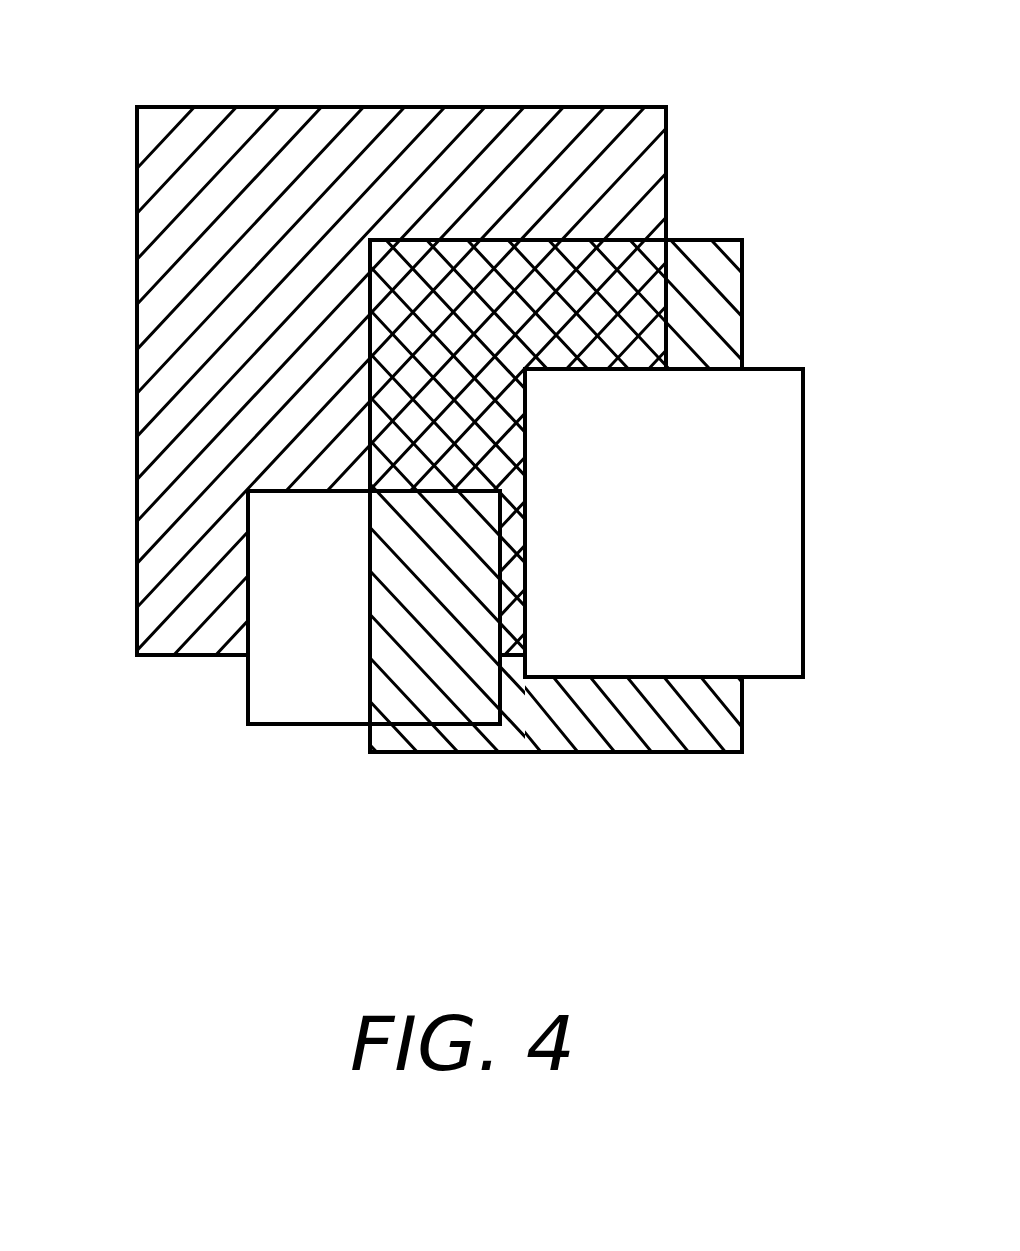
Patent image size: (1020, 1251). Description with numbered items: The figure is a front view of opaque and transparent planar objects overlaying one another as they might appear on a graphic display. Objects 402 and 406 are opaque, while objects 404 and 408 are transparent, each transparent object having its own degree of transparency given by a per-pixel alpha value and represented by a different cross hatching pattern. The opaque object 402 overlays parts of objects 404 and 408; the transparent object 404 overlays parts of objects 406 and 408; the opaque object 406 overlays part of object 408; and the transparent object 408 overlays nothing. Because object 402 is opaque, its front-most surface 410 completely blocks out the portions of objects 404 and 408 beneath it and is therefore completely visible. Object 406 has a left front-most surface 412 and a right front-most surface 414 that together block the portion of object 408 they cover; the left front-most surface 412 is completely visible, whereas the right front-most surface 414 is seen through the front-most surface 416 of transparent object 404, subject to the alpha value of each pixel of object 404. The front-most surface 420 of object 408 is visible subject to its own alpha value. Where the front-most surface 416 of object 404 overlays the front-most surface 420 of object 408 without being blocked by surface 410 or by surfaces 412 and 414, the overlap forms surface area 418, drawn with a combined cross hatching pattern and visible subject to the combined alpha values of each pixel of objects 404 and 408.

The opaque object 402 is at (728, 523).
The transparent object 404 is at (624, 576).
The opaque object 406 is at (315, 655).
The transparent object 408 is at (510, 338).
The front-most surface 410 is at (750, 440).
The left front-most surface 412 is at (275, 673).
The right front-most surface 414 is at (436, 700).
The front-most surface 416 is at (687, 720).
The surface area 418 is at (573, 303).
The front-most surface 420 is at (353, 148).